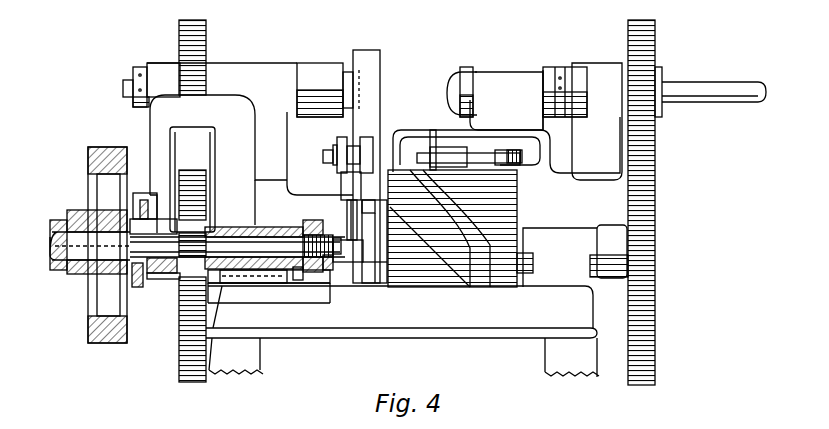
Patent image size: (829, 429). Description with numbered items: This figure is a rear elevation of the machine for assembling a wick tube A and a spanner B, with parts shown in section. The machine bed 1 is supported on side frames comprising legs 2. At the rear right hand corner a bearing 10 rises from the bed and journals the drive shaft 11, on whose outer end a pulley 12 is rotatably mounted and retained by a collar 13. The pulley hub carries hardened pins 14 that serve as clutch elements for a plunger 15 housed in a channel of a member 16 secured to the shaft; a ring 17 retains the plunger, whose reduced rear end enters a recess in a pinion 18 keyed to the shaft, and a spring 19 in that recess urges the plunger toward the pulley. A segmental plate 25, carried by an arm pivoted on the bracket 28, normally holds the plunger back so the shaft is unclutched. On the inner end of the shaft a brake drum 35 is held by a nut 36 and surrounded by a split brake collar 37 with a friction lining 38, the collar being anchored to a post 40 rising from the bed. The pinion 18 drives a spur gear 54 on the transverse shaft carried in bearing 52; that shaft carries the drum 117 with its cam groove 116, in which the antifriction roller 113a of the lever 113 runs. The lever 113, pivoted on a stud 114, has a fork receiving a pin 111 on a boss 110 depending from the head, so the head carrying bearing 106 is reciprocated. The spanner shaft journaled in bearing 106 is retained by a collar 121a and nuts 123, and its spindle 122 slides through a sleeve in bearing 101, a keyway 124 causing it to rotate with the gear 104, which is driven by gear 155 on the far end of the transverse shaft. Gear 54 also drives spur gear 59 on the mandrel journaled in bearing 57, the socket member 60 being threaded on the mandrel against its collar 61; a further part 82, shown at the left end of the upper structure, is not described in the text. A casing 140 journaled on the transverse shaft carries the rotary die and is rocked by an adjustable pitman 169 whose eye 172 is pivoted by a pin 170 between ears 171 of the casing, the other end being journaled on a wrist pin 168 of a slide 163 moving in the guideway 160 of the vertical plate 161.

The machine bed 1 is at (515, 322).
The legs 2 is at (243, 352).
The bearing 10 is at (248, 266).
The drive shaft 11 is at (258, 243).
The pulley 12 is at (107, 333).
The collar 13 is at (53, 272).
The hardened pin 14 is at (98, 206).
The plunger 15 is at (153, 227).
The member 16 is at (160, 279).
The ring 17 is at (137, 288).
The pinion 18 is at (180, 274).
The spring 19 is at (237, 247).
The segmental plate 25 is at (146, 197).
The bracket 28 is at (218, 164).
The brake drum 35 is at (324, 264).
The nut 36 is at (328, 237).
The split brake collar 37 is at (315, 219).
The lining 38 is at (307, 221).
The post 40 is at (302, 281).
The bearing 52 is at (572, 256).
The spur gear 54 is at (180, 352).
The bearing 57 is at (258, 66).
The spur gear 59 is at (207, 43).
The socket member 60 is at (307, 68).
The collar 61 is at (300, 78).
The spindle 82 is at (124, 86).
The bearing 101 is at (597, 73).
The gear 104 is at (656, 42).
The bearing 106 is at (510, 78).
The boss 110 is at (517, 150).
The pin 111 is at (522, 163).
The lever 113 is at (484, 157).
The antifriction roller 113a is at (422, 172).
The stud 114 is at (455, 148).
The cam groove 116 is at (465, 208).
The drum 117 is at (513, 205).
The collar 121a is at (471, 71).
The spindle 122 is at (704, 83).
The nuts 123 is at (553, 70).
The keyway 124 is at (677, 82).
The casing 140 is at (374, 70).
The gear 155 is at (660, 283).
The guideway 160 is at (375, 254).
The vertical plate 161 is at (381, 232).
The slide 163 is at (368, 268).
The wrist pin 168 is at (338, 258).
The adjustable pitman 169 is at (353, 218).
The pin 170 is at (325, 157).
The ears 171 is at (336, 149).
The eye 172 is at (353, 146).
The wick tube A is at (352, 56).
The spanner B is at (448, 72).